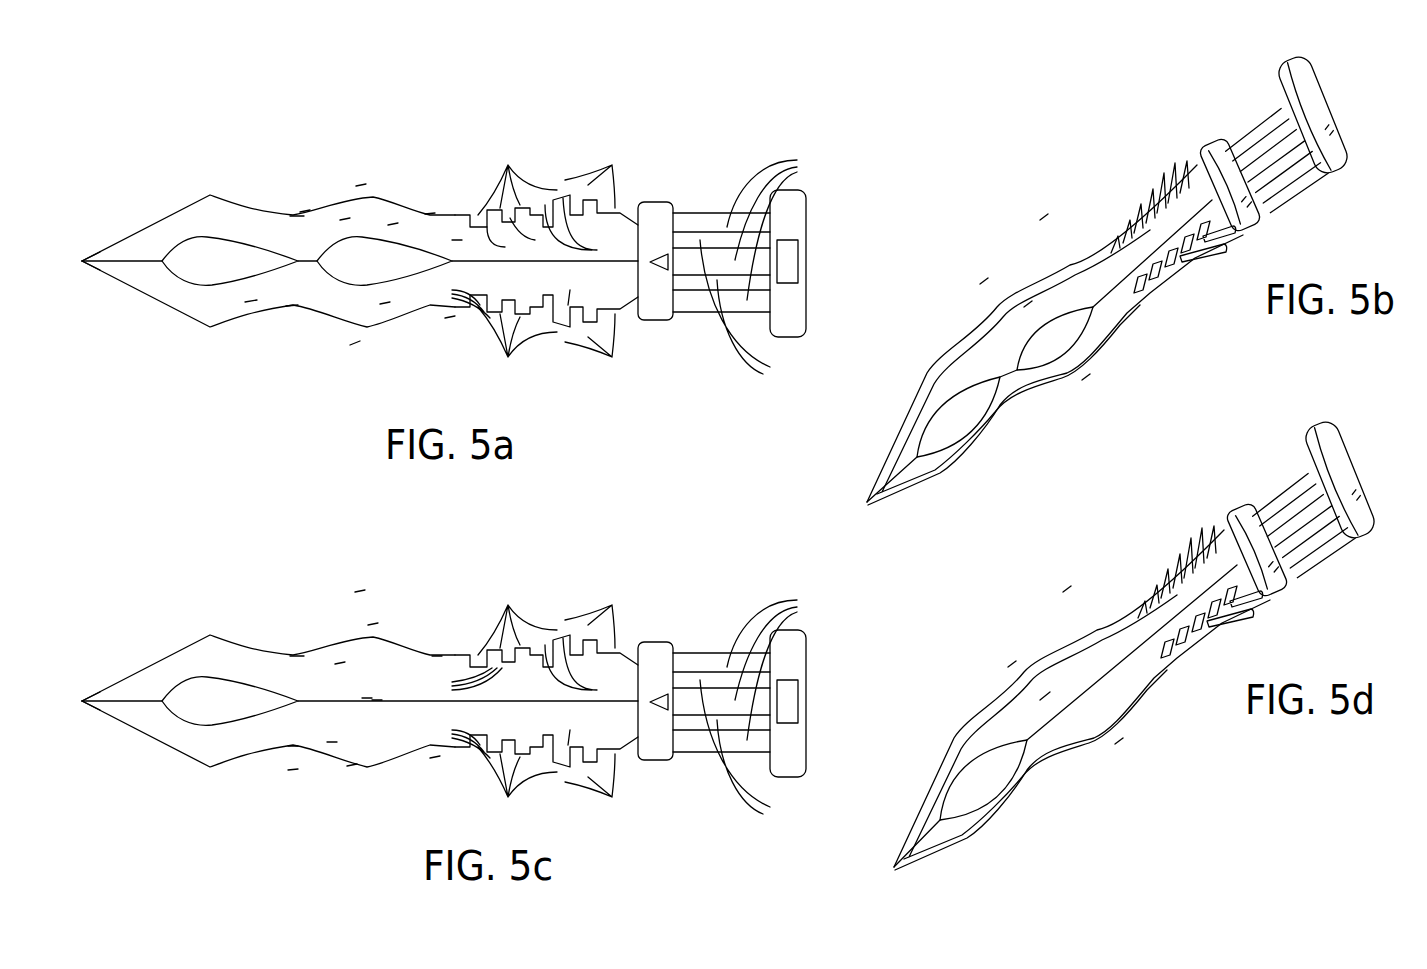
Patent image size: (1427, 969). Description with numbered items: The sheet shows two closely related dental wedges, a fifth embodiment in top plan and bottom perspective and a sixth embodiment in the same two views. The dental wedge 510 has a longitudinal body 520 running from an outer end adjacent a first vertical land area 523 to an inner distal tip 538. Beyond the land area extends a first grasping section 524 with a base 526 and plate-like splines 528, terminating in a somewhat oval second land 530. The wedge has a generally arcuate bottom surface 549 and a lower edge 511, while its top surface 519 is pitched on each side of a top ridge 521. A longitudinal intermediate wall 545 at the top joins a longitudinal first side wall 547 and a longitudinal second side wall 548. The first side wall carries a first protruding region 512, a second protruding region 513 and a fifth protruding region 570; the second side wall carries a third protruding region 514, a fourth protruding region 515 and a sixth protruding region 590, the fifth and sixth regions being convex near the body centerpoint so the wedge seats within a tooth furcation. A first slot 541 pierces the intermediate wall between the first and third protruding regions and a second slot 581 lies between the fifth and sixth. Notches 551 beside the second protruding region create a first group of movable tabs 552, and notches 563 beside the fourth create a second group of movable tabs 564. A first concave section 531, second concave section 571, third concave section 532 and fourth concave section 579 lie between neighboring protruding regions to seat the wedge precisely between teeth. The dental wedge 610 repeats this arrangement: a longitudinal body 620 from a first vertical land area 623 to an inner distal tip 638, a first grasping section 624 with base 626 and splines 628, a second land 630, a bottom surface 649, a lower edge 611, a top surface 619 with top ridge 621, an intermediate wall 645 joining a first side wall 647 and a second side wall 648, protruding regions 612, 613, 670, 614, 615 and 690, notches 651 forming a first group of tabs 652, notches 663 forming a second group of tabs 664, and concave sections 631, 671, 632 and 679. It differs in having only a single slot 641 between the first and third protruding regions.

In FIG. 5A, the dental wedge 510 is at (312, 163).
In FIG. 5B, the dental wedge 510 is at (1042, 218).
In FIG. 5B, the lower edge 511 is at (932, 470).
In FIG. 5A, the first protruding region 512 is at (205, 188).
In FIG. 5B, the first protruding region 512 is at (978, 475).
In FIG. 5A, the second protruding region 513 is at (553, 140).
In FIG. 5B, the second protruding region 513 is at (1207, 283).
In FIG. 5A, the third protruding region 514 is at (203, 330).
In FIG. 5B, the third protruding region 514 is at (925, 352).
In FIG. 5A, the fourth protruding region 515 is at (580, 366).
In FIG. 5B, the fourth protruding region 515 is at (1155, 150).
In FIG. 5A, the top surface 519 is at (318, 249).
In FIG. 5A, the longitudinal body 520 is at (252, 303).
In FIG. 5A, the top ridge 521 is at (457, 237).
In FIG. 5A, the first vertical land area 523 is at (655, 222).
In FIG. 5B, the first vertical land area 523 is at (1210, 160).
In FIG. 5A, the first grasping section 524 is at (706, 177).
In FIG. 5B, the first grasping section 524 is at (1300, 205).
In FIG. 5A, the base 526 is at (753, 313).
In FIG. 5A, the splines 528 is at (783, 225).
In FIG. 5A, the second land 530 is at (787, 313).
In FIG. 5B, the second land 530 is at (1320, 97).
In FIG. 5A, the first concave section 531 is at (297, 216).
In FIG. 5A, the third concave section 532 is at (292, 306).
In FIG. 5A, the inner distal tip 538 is at (88, 277).
In FIG. 5B, the inner distal tip 538 is at (862, 500).
In FIG. 5A, the first slot 541 is at (187, 270).
In FIG. 5B, the first slot 541 is at (937, 437).
In FIG. 5A, the longitudinal intermediate wall 545 is at (393, 223).
In FIG. 5A, the longitudinal first side wall 547 is at (345, 217).
In FIG. 5A, the longitudinal second side wall 548 is at (385, 303).
In FIG. 5B, the bottom surface 549 is at (1027, 305).
In FIG. 5A, the notches 551 is at (612, 167).
In FIG. 5A, the first group of movable tabs 552 is at (559, 229).
In FIG. 5A, the notches 563 is at (645, 354).
In FIG. 5A, the second group of movable tabs 564 is at (499, 290).
In FIG. 5A, the fifth protruding region 570 is at (362, 182).
In FIG. 5B, the fifth protruding region 570 is at (982, 282).
In FIG. 5A, the second concave section 571 is at (430, 213).
In FIG. 5A, the fourth concave section 579 is at (450, 318).
In FIG. 5A, the second slot 581 is at (353, 268).
In FIG. 5B, the second slot 581 is at (1065, 330).
In FIG. 5A, the sixth protruding region 590 is at (355, 343).
In FIG. 5B, the sixth protruding region 590 is at (1085, 378).
In FIG. 5C, the dental wedge 610 is at (360, 588).
In FIG. 5D, the dental wedge 610 is at (1065, 590).
In FIG. 5D, the lower edge 611 is at (970, 820).
In FIG. 5C, the first protruding region 612 is at (205, 628).
In FIG. 5D, the first protruding region 612 is at (1010, 830).
In FIG. 5C, the second protruding region 613 is at (553, 580).
In FIG. 5D, the second protruding region 613 is at (1255, 633).
In FIG. 5C, the third protruding region 614 is at (205, 770).
In FIG. 5D, the third protruding region 614 is at (935, 730).
In FIG. 5C, the fourth protruding region 615 is at (580, 806).
In FIG. 5D, the fourth protruding region 615 is at (1180, 512).
In FIG. 5C, the top surface 619 is at (318, 686).
In FIG. 5C, the longitudinal body 620 is at (352, 765).
In FIG. 5C, the top ridge 621 is at (437, 657).
In FIG. 5C, the first vertical land area 623 is at (655, 662).
In FIG. 5D, the first vertical land area 623 is at (1240, 522).
In FIG. 5C, the first grasping section 624 is at (706, 617).
In FIG. 5D, the first grasping section 624 is at (1320, 565).
In FIG. 5C, the base 626 is at (753, 751).
In FIG. 5C, the splines 628 is at (783, 664).
In FIG. 5C, the second land 630 is at (787, 753).
In FIG. 5D, the second land 630 is at (1345, 465).
In FIG. 5C, the first concave section 631 is at (297, 656).
In FIG. 5C, the third concave section 632 is at (293, 746).
In FIG. 5C, the inner distal tip 638 is at (88, 717).
In FIG. 5D, the inner distal tip 638 is at (888, 872).
In FIG. 5C, the slot 641 is at (205, 705).
In FIG. 5D, the slot 641 is at (992, 782).
In FIG. 5C, the longitudinal intermediate wall 645 is at (367, 697).
In FIG. 5C, the longitudinal first side wall 647 is at (340, 663).
In FIG. 5C, the longitudinal second side wall 648 is at (292, 770).
In FIG. 5D, the bottom surface 649 is at (1074, 702).
In FIG. 5C, the notches 651 is at (612, 605).
In FIG. 5C, the first group of tabs 652 is at (503, 670).
In FIG. 5C, the notches 663 is at (645, 794).
In FIG. 5C, the second group of tabs 664 is at (498, 729).
In FIG. 5C, the fifth protruding region 670 is at (373, 623).
In FIG. 5D, the fifth protruding region 670 is at (1010, 665).
In FIG. 5C, the second concave section 671 is at (377, 700).
In FIG. 5C, the fourth concave section 679 is at (435, 758).
In FIG. 5C, the sixth protruding region 690 is at (332, 742).
In FIG. 5D, the sixth protruding region 690 is at (1118, 742).